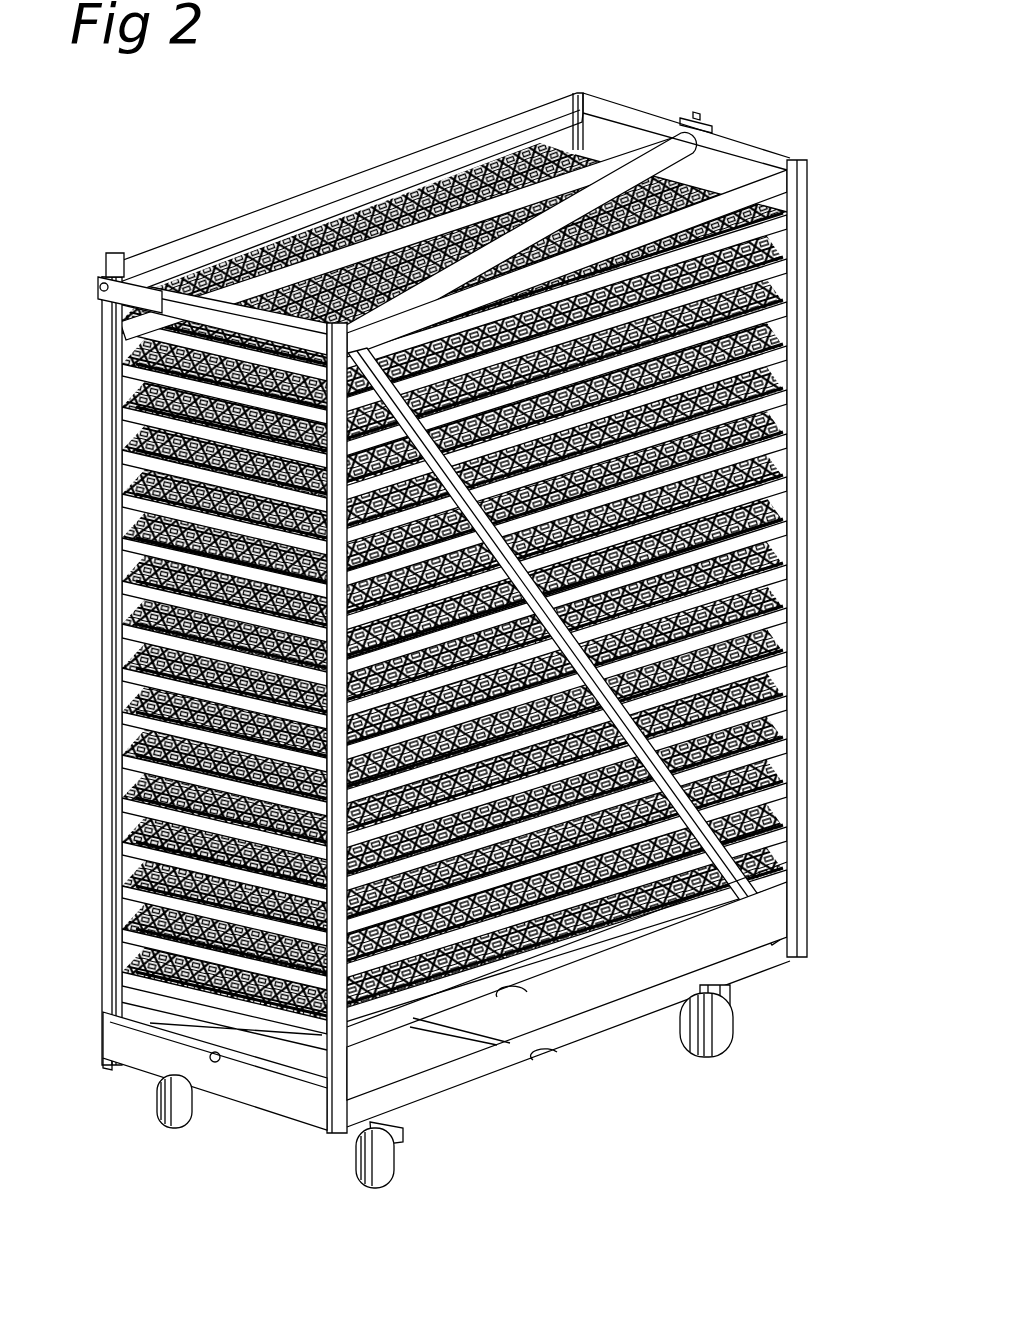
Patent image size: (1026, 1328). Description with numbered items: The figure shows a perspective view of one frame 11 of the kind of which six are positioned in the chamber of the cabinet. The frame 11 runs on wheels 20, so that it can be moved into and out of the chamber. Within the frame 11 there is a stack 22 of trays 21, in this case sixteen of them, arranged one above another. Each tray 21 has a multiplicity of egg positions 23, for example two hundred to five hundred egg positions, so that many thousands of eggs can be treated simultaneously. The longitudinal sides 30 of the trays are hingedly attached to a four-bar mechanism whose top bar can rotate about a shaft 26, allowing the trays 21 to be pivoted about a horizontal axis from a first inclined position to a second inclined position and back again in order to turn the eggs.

The frame 11 is at (818, 327).
The wheels 20 is at (715, 1043).
The tray 21 is at (792, 414).
The stack 22 is at (95, 300).
The egg positions 23 is at (712, 167).
The shaft 26 is at (457, 228).
The longitudinal sides 30 is at (778, 501).